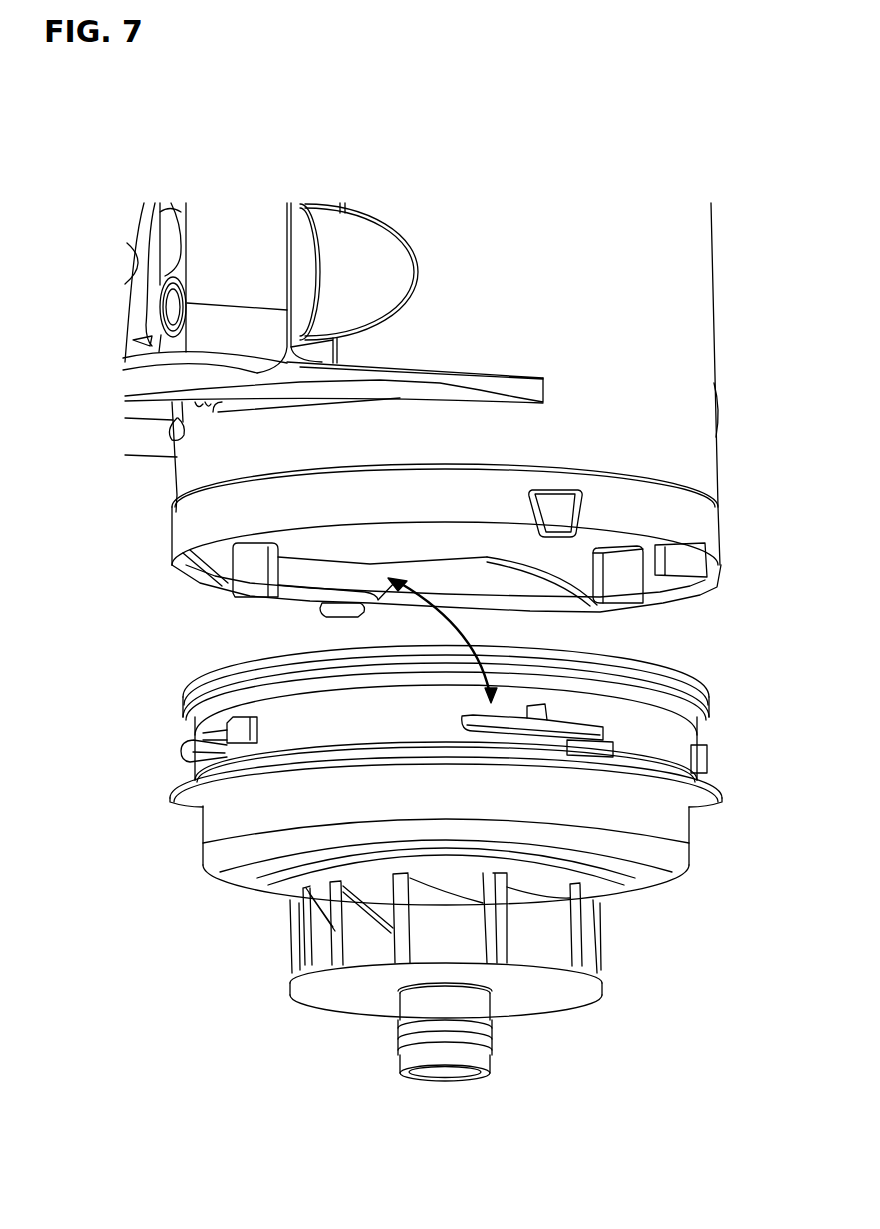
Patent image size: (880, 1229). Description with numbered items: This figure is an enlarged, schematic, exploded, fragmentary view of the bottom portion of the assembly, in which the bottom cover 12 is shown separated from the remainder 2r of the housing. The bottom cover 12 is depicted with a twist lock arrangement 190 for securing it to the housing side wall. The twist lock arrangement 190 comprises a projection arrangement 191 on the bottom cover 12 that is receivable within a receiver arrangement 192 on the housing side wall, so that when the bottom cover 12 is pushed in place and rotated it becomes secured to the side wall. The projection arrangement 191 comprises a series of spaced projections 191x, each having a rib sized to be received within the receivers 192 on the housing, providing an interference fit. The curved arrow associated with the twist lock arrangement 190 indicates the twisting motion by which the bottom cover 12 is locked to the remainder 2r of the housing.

The remainder of housing 2r is at (704, 363).
The receiver arrangement 192 is at (288, 566).
The twist lock arrangement 190 is at (437, 596).
The bottom cover 12 is at (673, 832).
The projection arrangement 191 is at (542, 728).
The spaced projections 191x is at (228, 738).